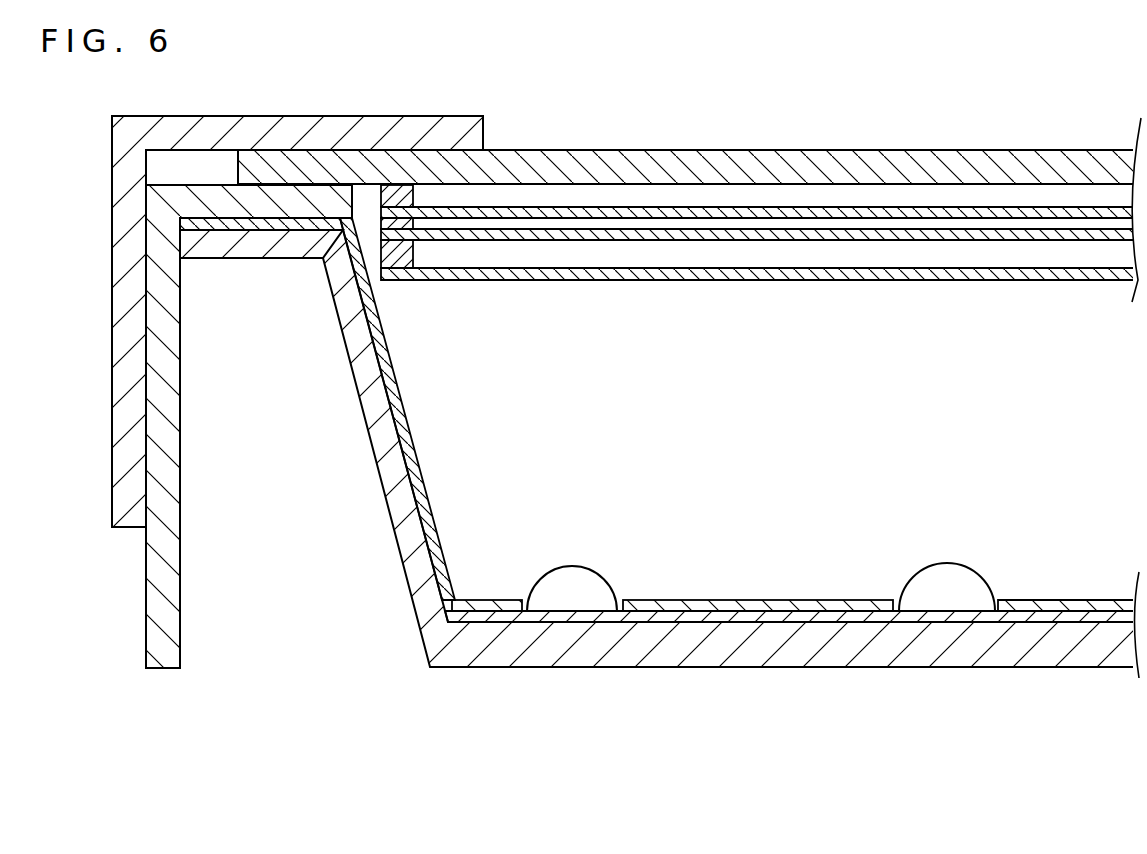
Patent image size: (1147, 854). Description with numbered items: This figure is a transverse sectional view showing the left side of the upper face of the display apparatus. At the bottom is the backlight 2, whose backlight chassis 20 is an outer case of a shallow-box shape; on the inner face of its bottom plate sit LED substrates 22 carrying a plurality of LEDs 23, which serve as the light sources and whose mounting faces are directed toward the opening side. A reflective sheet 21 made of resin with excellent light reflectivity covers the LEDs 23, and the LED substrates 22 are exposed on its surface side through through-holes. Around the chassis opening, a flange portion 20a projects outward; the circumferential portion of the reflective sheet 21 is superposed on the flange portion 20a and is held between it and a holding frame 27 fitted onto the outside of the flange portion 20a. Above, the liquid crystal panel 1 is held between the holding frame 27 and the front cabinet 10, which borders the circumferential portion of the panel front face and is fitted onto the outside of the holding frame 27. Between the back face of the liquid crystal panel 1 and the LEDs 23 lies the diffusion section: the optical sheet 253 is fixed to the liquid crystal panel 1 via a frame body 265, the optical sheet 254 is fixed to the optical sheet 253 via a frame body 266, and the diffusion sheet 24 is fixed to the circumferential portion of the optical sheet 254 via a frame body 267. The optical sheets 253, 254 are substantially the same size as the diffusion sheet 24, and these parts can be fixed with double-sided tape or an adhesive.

The liquid crystal panel 1 is at (827, 158).
The backlight 2 is at (830, 695).
The front cabinet 10 is at (202, 117).
The backlight chassis 20 is at (406, 577).
The flange portion 20a is at (257, 258).
The reflective sheet 21 is at (740, 600).
The LED substrate 22 is at (482, 613).
The LED 23 is at (571, 574).
The diffusion sheet 24 is at (732, 282).
The holding frame 27 is at (172, 497).
The optical sheet 253 is at (532, 222).
The optical sheet 254 is at (608, 242).
The frame body 265 is at (398, 192).
The frame body 266 is at (392, 224).
The frame body 267 is at (404, 264).